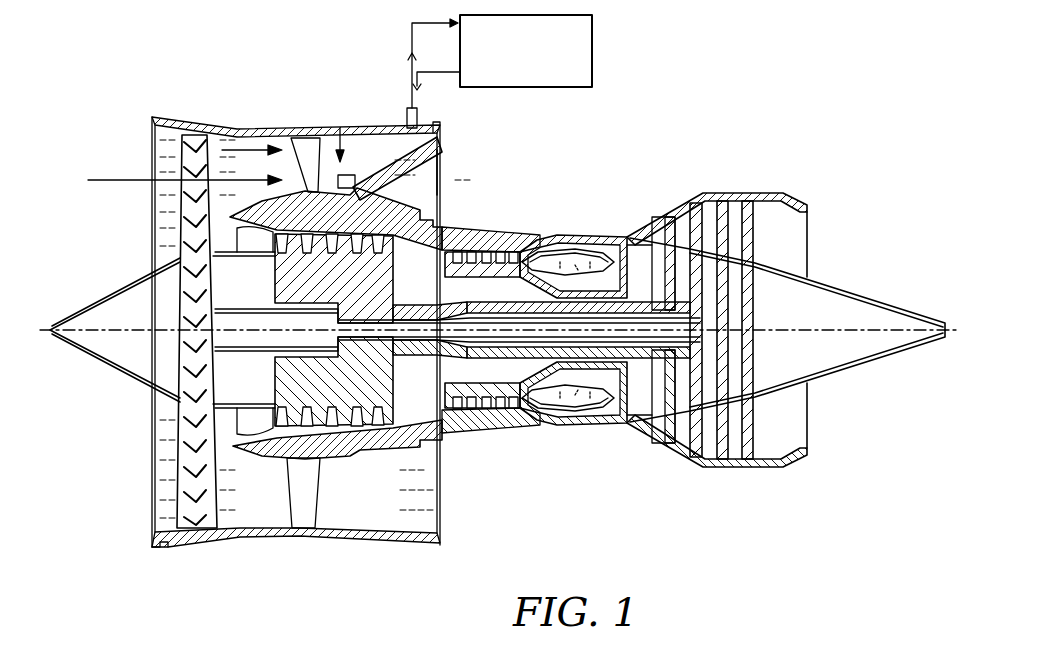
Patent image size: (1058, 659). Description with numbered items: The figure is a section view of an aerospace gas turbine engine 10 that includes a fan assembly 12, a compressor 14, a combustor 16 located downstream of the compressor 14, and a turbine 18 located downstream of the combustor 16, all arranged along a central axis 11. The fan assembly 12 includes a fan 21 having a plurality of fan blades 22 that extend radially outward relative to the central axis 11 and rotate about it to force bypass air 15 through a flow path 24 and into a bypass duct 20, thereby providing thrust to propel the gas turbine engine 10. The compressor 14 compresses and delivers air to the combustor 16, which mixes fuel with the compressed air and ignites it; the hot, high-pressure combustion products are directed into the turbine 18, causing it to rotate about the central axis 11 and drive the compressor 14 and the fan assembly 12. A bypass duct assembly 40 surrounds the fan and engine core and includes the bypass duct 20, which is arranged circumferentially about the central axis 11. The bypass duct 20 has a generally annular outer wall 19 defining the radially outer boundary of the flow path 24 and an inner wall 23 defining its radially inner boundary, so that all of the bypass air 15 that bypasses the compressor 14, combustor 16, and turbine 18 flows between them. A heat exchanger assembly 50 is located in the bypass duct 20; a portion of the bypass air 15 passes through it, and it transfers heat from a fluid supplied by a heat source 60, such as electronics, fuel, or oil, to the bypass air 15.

The gas turbine engine 10 is at (851, 97).
The central axis 11 is at (898, 330).
The fan assembly 12 is at (190, 217).
The compressor 14 is at (237, 128).
The bypass air 15 is at (120, 182).
The combustor 16 is at (587, 247).
The turbine 18 is at (747, 205).
The outer wall 19 is at (296, 128).
The bypass duct 20 is at (341, 128).
The fan 21 is at (157, 310).
The fan blades 22 is at (197, 448).
The inner wall 23 is at (443, 170).
The flow path 24 is at (273, 238).
The bypass duct assembly 40 is at (392, 124).
The heat exchanger assembly 50 is at (445, 145).
The heat source 60 is at (592, 45).